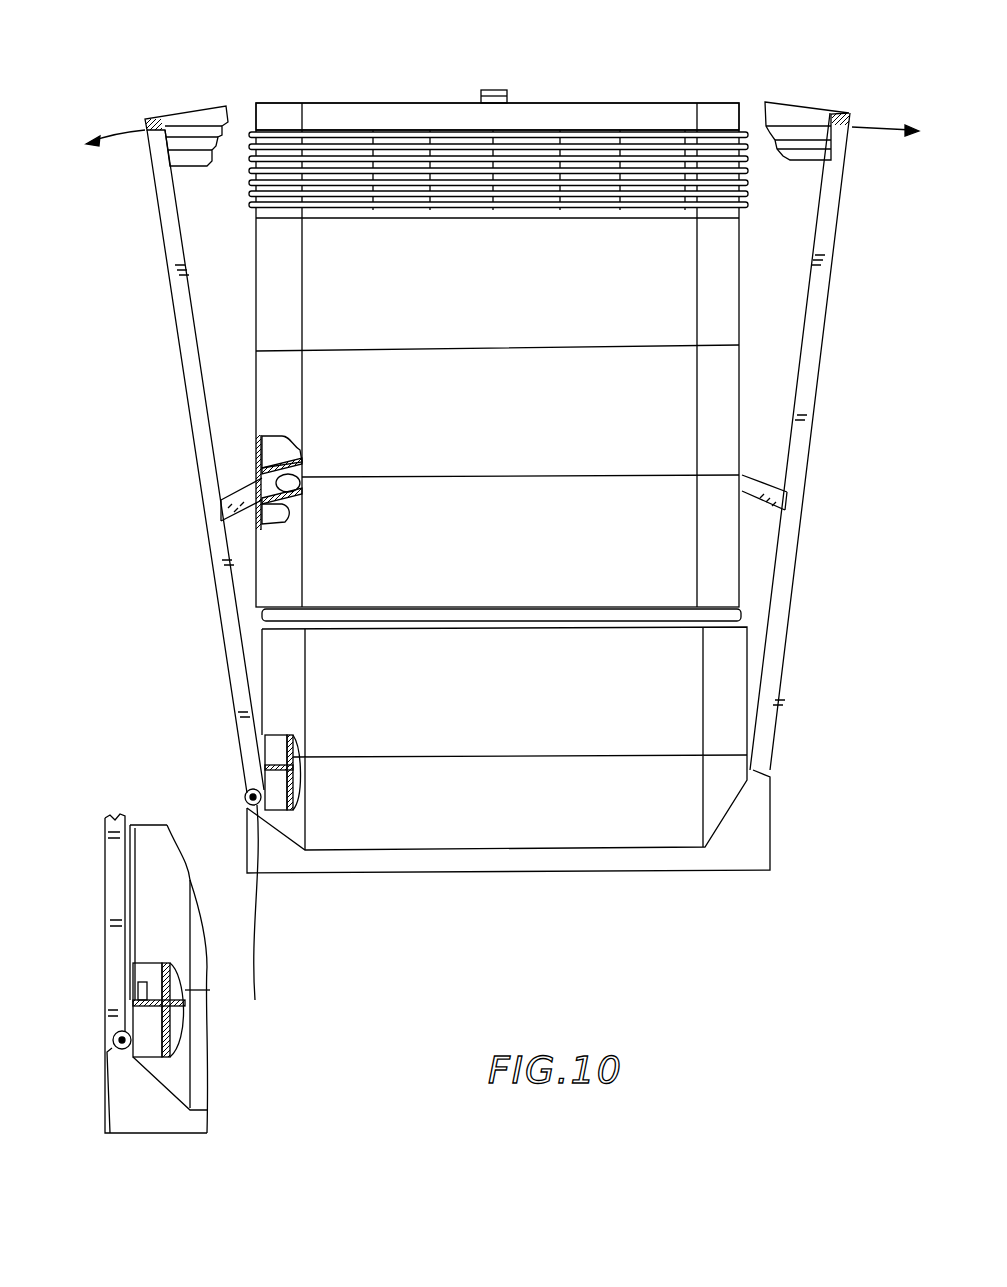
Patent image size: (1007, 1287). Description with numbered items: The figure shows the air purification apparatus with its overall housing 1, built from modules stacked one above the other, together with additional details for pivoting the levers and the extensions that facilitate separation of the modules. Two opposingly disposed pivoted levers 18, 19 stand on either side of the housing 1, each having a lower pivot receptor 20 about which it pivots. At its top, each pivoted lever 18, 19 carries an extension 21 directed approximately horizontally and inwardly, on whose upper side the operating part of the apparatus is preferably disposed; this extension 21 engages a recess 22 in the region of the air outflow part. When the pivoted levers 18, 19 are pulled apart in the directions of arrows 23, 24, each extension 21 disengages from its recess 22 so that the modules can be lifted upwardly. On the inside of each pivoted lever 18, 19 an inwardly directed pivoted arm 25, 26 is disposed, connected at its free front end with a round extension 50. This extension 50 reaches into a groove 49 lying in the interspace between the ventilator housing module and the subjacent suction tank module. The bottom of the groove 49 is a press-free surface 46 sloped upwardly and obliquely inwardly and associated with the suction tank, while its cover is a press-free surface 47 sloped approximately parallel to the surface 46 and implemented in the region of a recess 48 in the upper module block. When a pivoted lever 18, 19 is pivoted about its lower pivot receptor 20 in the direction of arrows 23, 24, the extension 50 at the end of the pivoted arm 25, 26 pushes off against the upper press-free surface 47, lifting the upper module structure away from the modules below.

The overall housing 1 is at (524, 73).
The pivoted lever 18 is at (180, 346).
The pivoted lever 19 is at (820, 352).
The lower pivot receptor 20 is at (135, 1030).
The extension 21 is at (201, 107).
The recess 22 is at (281, 103).
The arrow 23 is at (110, 134).
The arrow 24 is at (890, 126).
The pivoted arm 25 is at (235, 498).
The pivoted arm 26 is at (768, 490).
The press-free surface 46 is at (300, 488).
The press-free surface 47 is at (300, 470).
The recess 48 is at (293, 455).
The groove 49 is at (278, 508).
The extension 50 is at (290, 500).